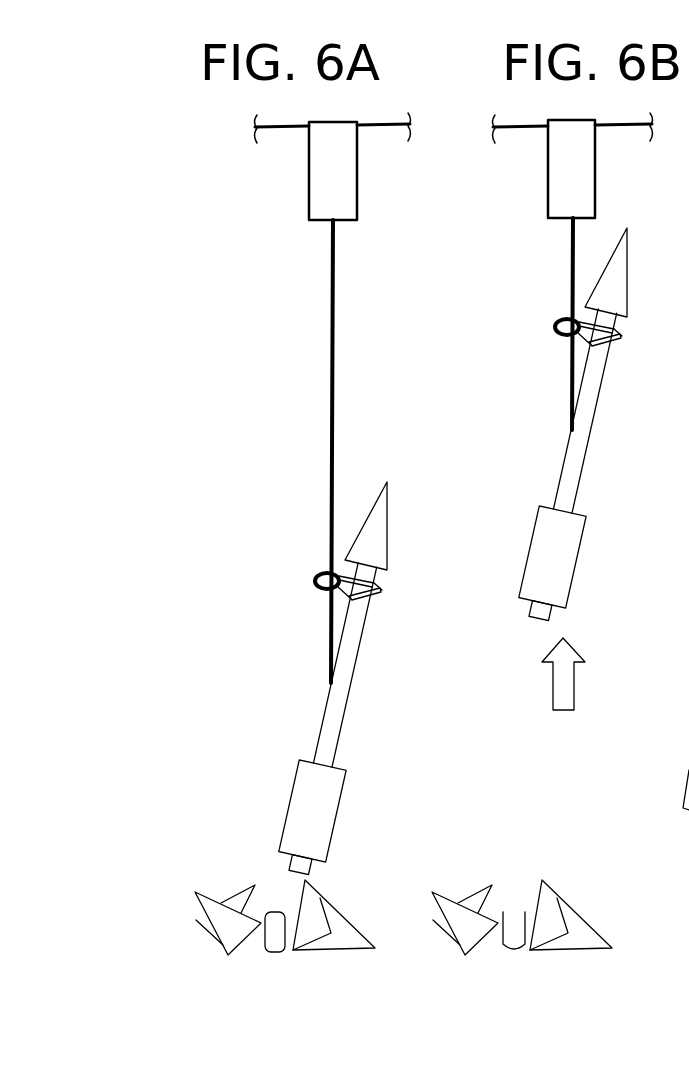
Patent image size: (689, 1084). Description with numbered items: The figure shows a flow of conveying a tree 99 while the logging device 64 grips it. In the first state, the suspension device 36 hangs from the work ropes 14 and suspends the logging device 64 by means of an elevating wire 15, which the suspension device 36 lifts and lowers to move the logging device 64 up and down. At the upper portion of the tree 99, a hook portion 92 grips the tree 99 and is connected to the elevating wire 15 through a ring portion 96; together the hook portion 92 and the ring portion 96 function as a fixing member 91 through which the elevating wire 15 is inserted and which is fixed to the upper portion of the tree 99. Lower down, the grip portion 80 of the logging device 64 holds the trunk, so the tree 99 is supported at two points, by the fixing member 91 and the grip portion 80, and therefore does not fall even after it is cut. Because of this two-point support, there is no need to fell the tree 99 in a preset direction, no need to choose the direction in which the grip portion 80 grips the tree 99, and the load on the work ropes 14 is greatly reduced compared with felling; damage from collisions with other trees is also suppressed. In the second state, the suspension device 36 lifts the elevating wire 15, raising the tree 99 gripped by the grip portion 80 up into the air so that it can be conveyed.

In FIG. 6A, the work rope 14 is at (290, 130).
In FIG. 6B, the work rope 14 is at (532, 130).
In FIG. 6A, the elevating wire 15 is at (335, 270).
In FIG. 6B, the elevating wire 15 is at (570, 262).
In FIG. 6A, the suspension device 36 is at (358, 163).
In FIG. 6B, the suspension device 36 is at (596, 163).
In FIG. 6A, the logging device 64 is at (363, 819).
In FIG. 6B, the logging device 64 is at (602, 565).
In FIG. 6A, the grip portion 80 is at (347, 797).
In FIG. 6B, the grip portion 80 is at (587, 562).
In FIG. 6A, the fixing member 91 is at (393, 579).
In FIG. 6B, the fixing member 91 is at (634, 326).
In FIG. 6A, the hook portion 92 is at (368, 603).
In FIG. 6B, the hook portion 92 is at (608, 350).
In FIG. 6A, the ring portion 96 is at (313, 580).
In FIG. 6B, the ring portion 96 is at (553, 326).
In FIG. 6A, the tree 99 is at (350, 695).
In FIG. 6B, the tree 99 is at (590, 441).